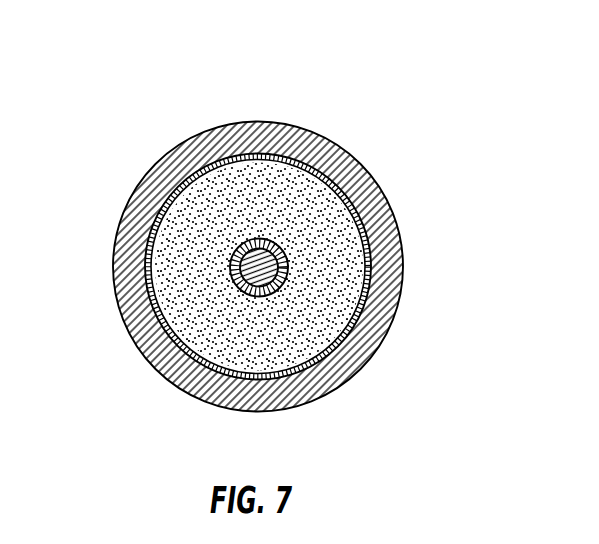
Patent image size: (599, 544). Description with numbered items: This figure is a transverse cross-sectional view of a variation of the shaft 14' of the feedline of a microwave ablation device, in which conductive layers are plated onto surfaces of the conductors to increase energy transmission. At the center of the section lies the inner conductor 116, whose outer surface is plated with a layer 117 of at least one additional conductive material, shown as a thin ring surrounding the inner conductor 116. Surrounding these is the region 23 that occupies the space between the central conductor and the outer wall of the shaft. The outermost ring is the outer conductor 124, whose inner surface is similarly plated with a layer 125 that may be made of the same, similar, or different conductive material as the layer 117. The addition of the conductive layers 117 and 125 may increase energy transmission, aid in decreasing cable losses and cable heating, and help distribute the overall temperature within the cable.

The shaft 14' is at (148, 46).
The outer conductor 124 is at (302, 127).
The layer 125 is at (187, 172).
The buffer / filler material 23 is at (343, 230).
The inner conductor 116 is at (290, 270).
The layer 117 is at (230, 263).